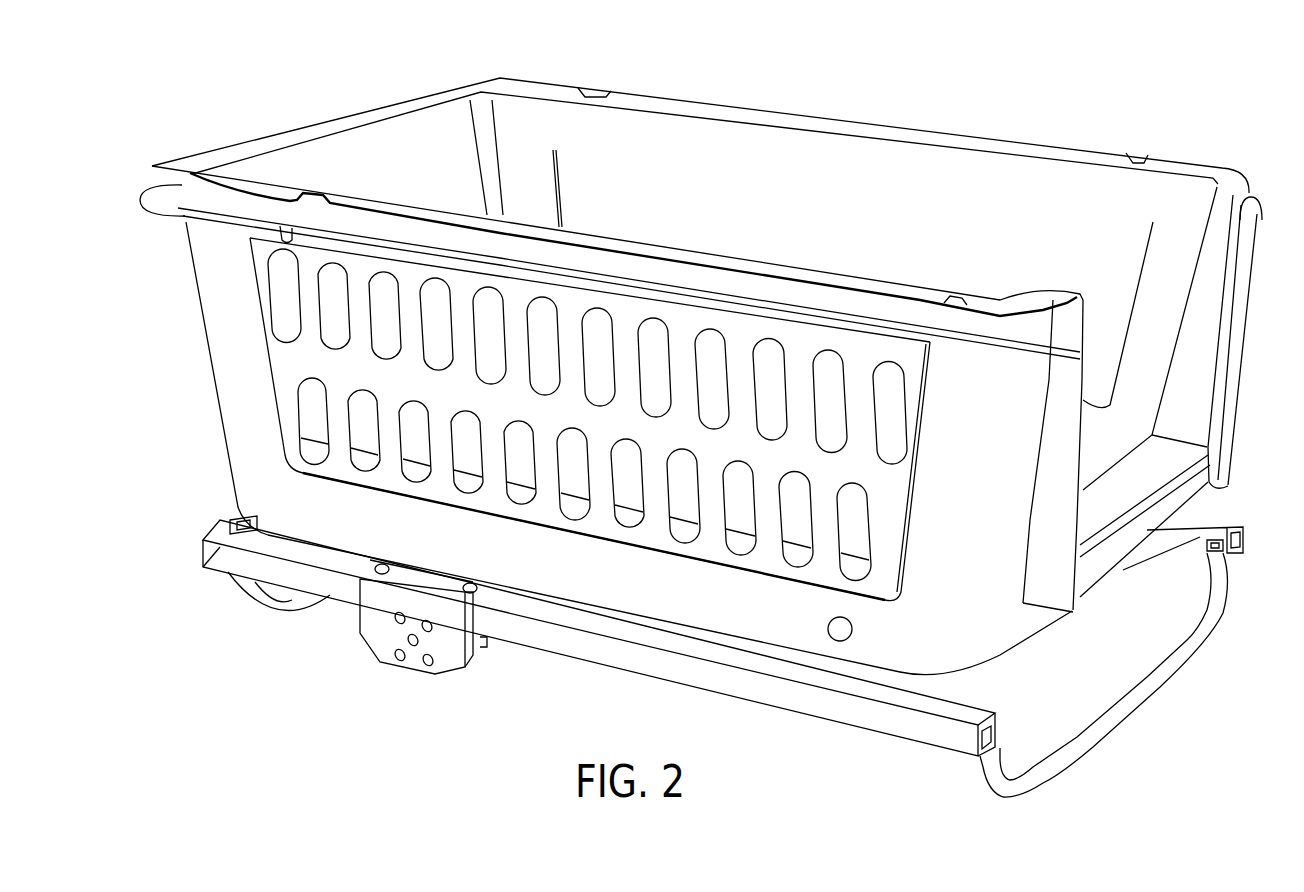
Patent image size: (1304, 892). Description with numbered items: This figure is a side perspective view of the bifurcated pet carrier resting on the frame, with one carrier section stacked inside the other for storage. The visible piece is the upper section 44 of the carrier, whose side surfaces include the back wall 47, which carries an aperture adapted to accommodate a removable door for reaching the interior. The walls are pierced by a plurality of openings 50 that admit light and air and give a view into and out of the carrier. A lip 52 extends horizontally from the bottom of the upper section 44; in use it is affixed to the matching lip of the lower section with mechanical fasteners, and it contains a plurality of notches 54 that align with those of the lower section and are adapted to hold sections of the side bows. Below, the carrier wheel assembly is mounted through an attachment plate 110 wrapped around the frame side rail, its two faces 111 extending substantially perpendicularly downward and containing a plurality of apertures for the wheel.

The upper section 44 is at (243, 376).
The back wall 47 is at (1032, 617).
The openings 50 is at (331, 311).
The lip 52 is at (141, 185).
The notches 54 is at (592, 97).
The attachment plate 110 is at (377, 591).
The faces 111 is at (452, 656).